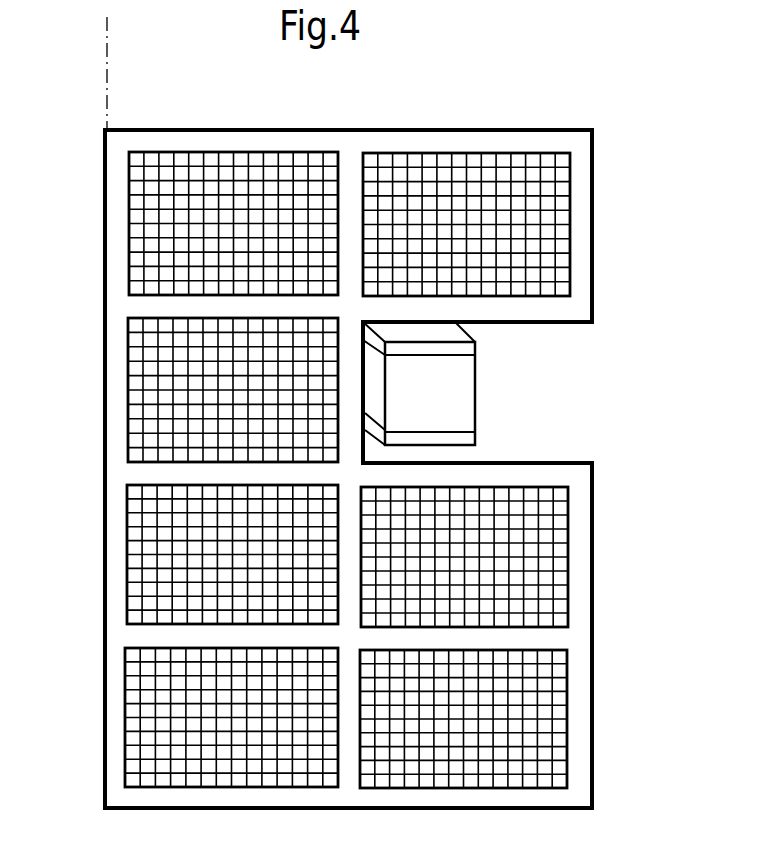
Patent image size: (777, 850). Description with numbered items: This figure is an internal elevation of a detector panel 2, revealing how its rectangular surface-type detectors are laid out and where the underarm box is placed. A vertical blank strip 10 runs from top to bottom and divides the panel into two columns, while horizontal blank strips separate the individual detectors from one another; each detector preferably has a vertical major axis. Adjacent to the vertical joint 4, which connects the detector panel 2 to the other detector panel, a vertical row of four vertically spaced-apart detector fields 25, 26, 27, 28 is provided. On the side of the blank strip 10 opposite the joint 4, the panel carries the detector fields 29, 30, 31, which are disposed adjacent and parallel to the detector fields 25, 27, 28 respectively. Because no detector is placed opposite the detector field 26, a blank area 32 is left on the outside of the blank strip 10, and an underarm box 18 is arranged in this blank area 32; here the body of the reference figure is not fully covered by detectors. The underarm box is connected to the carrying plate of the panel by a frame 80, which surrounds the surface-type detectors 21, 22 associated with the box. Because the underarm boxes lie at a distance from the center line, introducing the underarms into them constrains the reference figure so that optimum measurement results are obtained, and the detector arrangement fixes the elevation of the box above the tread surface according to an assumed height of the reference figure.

The detector panel 2 is at (440, 130).
The vertical joint 4 is at (105, 132).
The vertical blank strip 10 is at (349, 173).
The underarm box 18 is at (409, 400).
The surface-type detector 21 is at (455, 349).
The surface-type detector 22 is at (455, 438).
The detector field 25 is at (166, 252).
The detector field 26 is at (197, 415).
The detector field 27 is at (193, 563).
The detector field 28 is at (192, 712).
The detector field 29 is at (493, 219).
The detector field 30 is at (478, 552).
The detector field 31 is at (490, 713).
The blank area 32 is at (515, 396).
The frame 80 is at (475, 415).